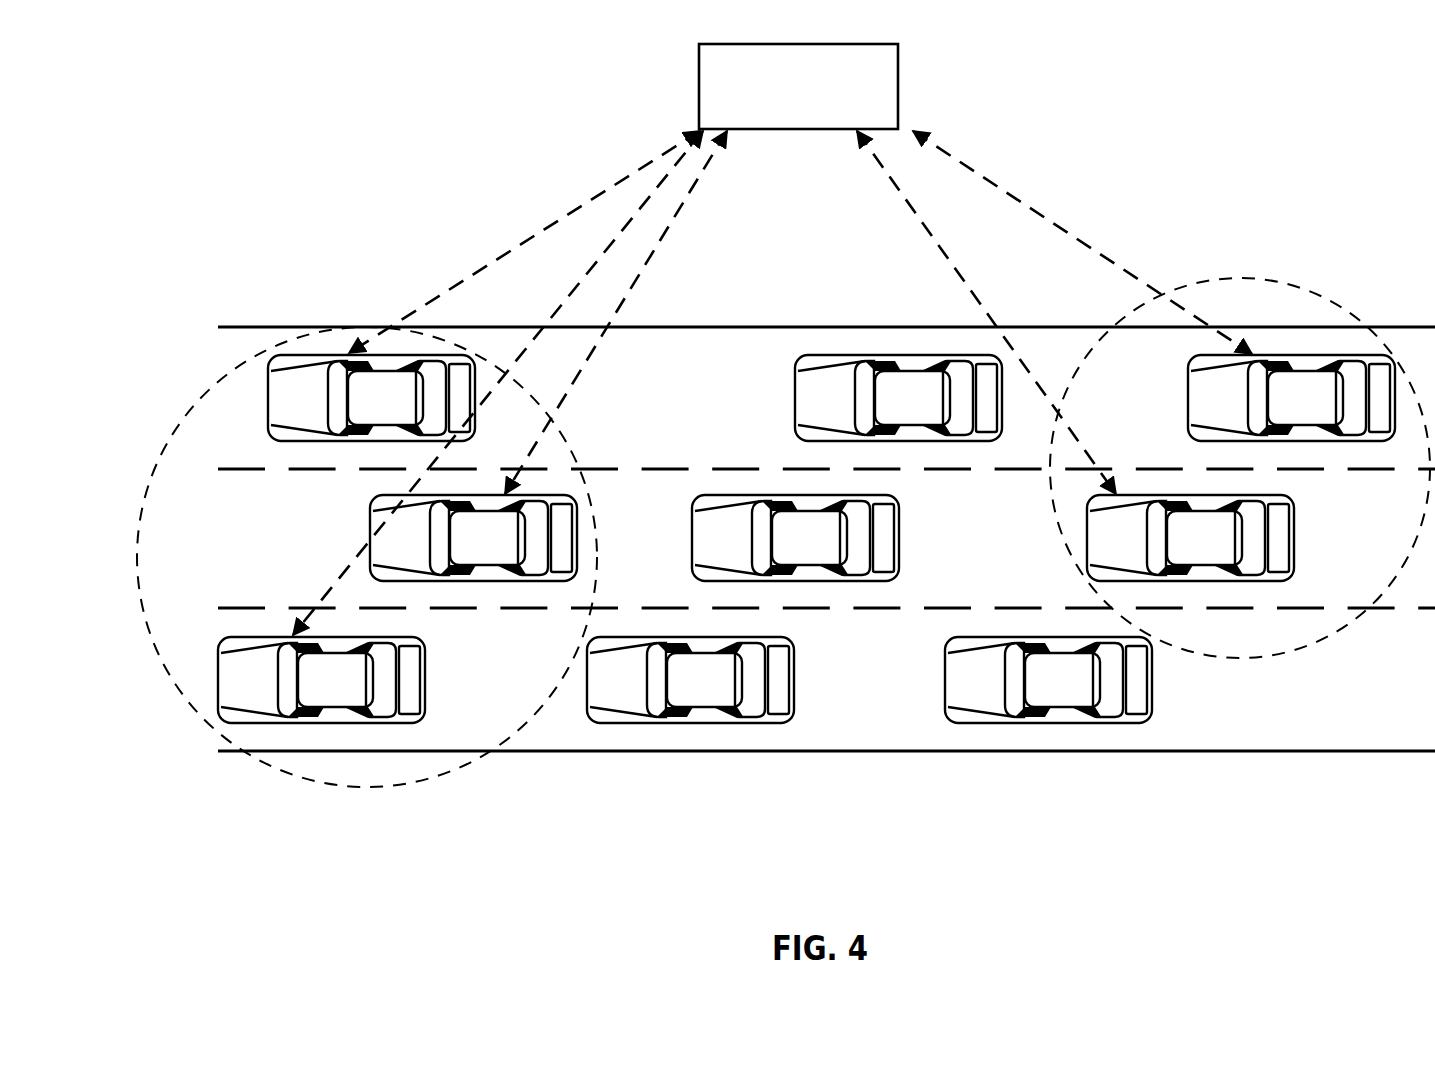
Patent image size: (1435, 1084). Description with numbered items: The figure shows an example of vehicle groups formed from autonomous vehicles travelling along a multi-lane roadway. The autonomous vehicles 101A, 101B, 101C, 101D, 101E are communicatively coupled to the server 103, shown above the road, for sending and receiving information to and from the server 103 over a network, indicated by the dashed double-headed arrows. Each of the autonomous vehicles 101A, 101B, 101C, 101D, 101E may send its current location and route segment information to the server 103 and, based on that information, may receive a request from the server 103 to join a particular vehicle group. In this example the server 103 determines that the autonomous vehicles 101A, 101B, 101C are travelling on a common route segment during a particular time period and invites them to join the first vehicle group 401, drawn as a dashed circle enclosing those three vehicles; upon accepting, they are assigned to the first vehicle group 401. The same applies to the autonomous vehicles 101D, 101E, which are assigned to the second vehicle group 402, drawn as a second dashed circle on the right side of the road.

The server 103 is at (817, 112).
The autonomous vehicle 101A is at (360, 415).
The autonomous vehicle 101B is at (462, 555).
The autonomous vehicle 101C is at (310, 697).
The autonomous vehicle 101D is at (1280, 415).
The autonomous vehicle 101E is at (1179, 555).
The first vehicle group 401 is at (205, 390).
The second vehicle group 402 is at (1243, 278).